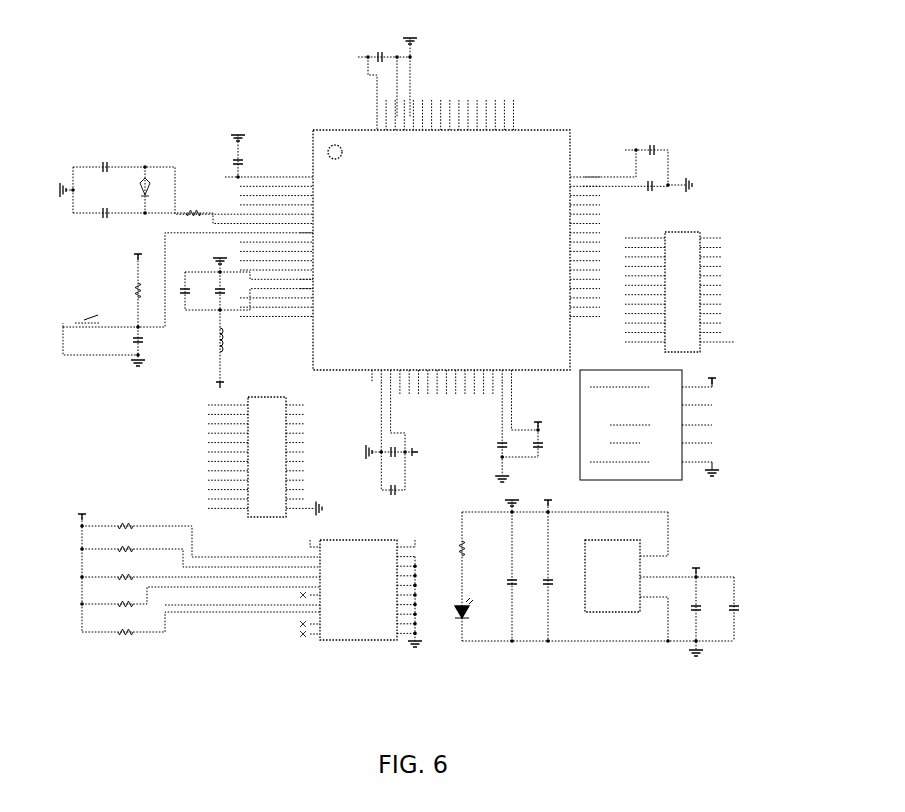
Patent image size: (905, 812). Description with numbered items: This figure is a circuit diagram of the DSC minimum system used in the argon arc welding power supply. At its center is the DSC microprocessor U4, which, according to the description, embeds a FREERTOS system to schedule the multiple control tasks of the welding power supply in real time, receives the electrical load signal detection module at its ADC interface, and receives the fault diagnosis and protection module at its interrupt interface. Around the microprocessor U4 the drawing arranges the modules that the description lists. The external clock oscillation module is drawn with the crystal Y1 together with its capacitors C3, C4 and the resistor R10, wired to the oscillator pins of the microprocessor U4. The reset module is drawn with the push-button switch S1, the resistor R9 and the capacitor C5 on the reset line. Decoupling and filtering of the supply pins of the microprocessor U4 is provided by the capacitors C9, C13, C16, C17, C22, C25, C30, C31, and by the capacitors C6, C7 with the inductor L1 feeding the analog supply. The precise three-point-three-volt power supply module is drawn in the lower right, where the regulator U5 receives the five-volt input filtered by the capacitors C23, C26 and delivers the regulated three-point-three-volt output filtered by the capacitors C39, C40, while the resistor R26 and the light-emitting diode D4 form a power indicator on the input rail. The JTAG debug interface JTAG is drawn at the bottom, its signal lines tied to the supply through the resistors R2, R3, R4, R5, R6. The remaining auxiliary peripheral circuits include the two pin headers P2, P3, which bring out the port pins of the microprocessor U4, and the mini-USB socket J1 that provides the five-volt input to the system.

The microcontroller U4 is at (420, 243).
The crystal load capacitor C3 is at (157, 173).
The crystal load capacitor C4 is at (109, 222).
The crystal oscillator Y1 is at (131, 190).
The resistor R10 is at (229, 208).
The decoupling capacitor C9 is at (234, 145).
The decoupling capacitor C13 is at (366, 62).
The pull-up resistor R9 is at (206, 281).
The push-button reset switch S1 is at (100, 327).
The reset capacitor C5 is at (145, 364).
The filter capacitor C6 is at (246, 272).
The filter capacitor C7 is at (233, 291).
The inductor L1 is at (220, 355).
The header 12x2 connector P2 is at (214, 447).
The decoupling capacitor C16 is at (406, 436).
The decoupling capacitor C17 is at (380, 504).
The VCAP capacitor C22 is at (499, 448).
The decoupling capacitor C25 is at (550, 423).
The decoupling capacitor C30 is at (620, 151).
The VCAP capacitor C31 is at (666, 194).
The header 12x2 connector P3 is at (706, 282).
The mini-USB-B socket J1 is at (723, 427).
The pull-up resistor R2 is at (185, 566).
The pull-up resistor R3 is at (200, 546).
The pull-up resistor R4 is at (200, 566).
The pull-up resistor R5 is at (200, 591).
The pull-up resistor R6 is at (201, 614).
The JTAG debug interface JTAG is at (360, 602).
The LED current limiting resistor R26 is at (563, 565).
The power indicator LED D4 is at (482, 628).
The input filter capacitor C23 is at (496, 576).
The input filter capacitor C26 is at (598, 564).
The AMS1117 voltage regulator U5 is at (655, 576).
The output filter capacitor C39 is at (707, 615).
The output filter capacitor C40 is at (756, 609).